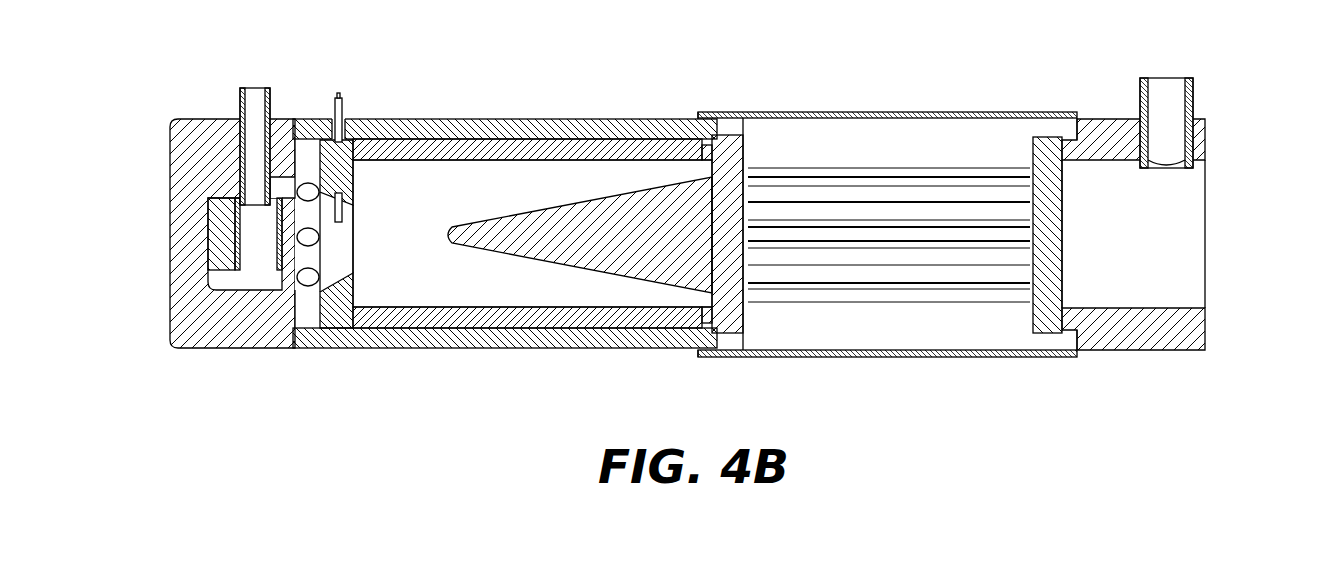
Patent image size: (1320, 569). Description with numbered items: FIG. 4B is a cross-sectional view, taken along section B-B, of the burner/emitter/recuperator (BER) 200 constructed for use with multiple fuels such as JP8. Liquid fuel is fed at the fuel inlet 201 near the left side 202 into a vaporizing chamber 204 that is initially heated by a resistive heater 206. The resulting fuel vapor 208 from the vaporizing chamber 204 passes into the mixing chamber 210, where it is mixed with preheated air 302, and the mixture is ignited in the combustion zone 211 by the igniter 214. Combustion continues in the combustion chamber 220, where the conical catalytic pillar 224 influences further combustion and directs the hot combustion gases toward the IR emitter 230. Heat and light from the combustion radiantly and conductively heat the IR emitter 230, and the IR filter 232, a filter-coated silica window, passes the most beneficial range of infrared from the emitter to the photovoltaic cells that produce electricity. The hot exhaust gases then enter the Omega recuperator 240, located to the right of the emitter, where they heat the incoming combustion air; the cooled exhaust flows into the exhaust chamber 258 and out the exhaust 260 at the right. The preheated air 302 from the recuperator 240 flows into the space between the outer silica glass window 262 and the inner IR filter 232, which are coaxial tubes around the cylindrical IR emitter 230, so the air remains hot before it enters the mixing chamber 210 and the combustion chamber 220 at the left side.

The burner/emitter/recuperator (BER) 200 is at (550, 418).
The fuel inlet 201 is at (253, 82).
The left side 202 is at (156, 318).
The vaporizing chamber 204 is at (248, 270).
The resistive heater 206 is at (220, 192).
The fuel vapor 208 is at (306, 293).
The mixing chamber 210 is at (305, 292).
The combustion zone 211 is at (343, 252).
The igniter 214 is at (337, 107).
The combustion chamber 220 is at (503, 293).
The conical catalytic pillar 224 is at (622, 278).
The IR emitter 230 is at (570, 156).
The IR filter 232 is at (482, 136).
The Omega recuperator 240 is at (860, 147).
The exhaust chamber 258 is at (1180, 282).
The exhaust 260 is at (1193, 88).
The silica glass window 262 is at (418, 114).
The preheated air 302 is at (632, 127).